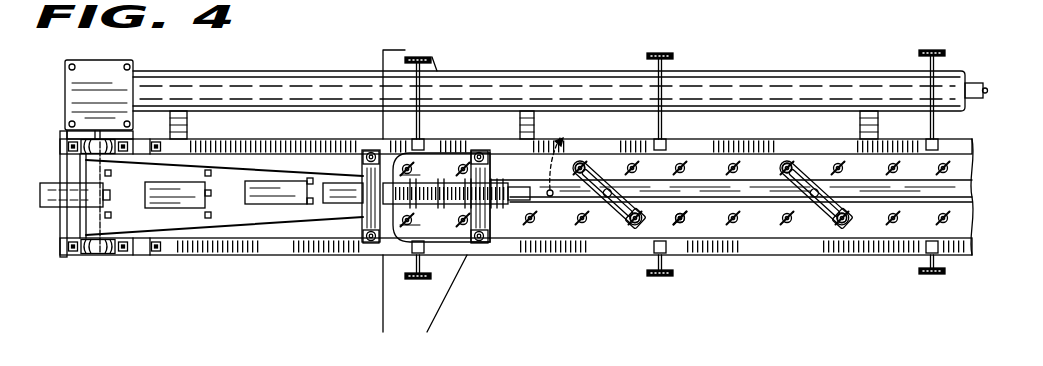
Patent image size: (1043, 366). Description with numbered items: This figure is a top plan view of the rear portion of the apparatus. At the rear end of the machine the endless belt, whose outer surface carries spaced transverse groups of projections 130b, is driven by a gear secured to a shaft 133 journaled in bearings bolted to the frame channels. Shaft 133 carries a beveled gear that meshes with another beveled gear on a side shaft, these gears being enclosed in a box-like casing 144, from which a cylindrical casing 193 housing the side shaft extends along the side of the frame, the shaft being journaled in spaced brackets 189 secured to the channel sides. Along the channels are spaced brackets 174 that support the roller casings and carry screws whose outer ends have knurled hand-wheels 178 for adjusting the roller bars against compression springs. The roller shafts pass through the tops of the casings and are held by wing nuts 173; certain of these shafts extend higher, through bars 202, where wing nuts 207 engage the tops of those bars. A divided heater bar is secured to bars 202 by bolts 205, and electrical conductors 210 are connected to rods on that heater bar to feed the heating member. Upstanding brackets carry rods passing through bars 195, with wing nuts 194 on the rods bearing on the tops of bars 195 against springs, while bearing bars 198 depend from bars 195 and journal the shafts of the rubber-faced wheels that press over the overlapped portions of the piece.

The box-like casing 144 is at (80, 77).
The brackets 189 is at (185, 134).
The hand-wheels 178 is at (425, 58).
The brackets 174 is at (665, 142).
The cylindrical casing 193 is at (733, 72).
The electrical conductors 210 is at (560, 138).
The bars 202 is at (588, 165).
The bearing bars 198 is at (428, 158).
The bars 195 is at (362, 228).
The shaft 133 is at (100, 254).
The projections 130b is at (204, 215).
The wing nuts 173 is at (534, 218).
The bolts 205 is at (740, 218).
The wing nuts 207 is at (752, 174).
The wing nuts 194 is at (888, 168).